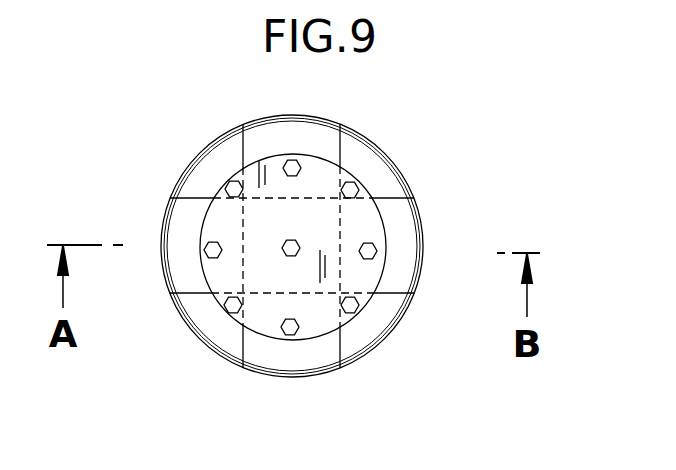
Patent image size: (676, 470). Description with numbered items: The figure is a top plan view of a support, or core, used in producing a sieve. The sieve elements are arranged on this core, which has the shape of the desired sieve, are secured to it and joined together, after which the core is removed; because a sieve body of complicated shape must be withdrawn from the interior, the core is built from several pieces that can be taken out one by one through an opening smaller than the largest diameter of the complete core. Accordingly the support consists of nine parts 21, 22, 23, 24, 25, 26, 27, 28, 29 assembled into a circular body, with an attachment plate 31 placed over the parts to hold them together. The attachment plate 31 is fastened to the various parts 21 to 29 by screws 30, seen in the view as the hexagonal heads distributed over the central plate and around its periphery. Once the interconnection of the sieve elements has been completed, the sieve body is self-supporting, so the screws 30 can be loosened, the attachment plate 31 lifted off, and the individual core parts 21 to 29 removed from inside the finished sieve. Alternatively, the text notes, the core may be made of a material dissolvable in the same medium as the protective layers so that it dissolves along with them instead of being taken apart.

The core part 21 is at (300, 228).
The core part 22 is at (292, 370).
The core part 23 is at (307, 128).
The core part 24 is at (182, 275).
The core part 25 is at (407, 223).
The core part 26 is at (383, 343).
The core part 27 is at (222, 338).
The core part 28 is at (213, 162).
The core part 29 is at (372, 157).
The screw 30 is at (375, 252).
The attachment plate 31 is at (358, 285).